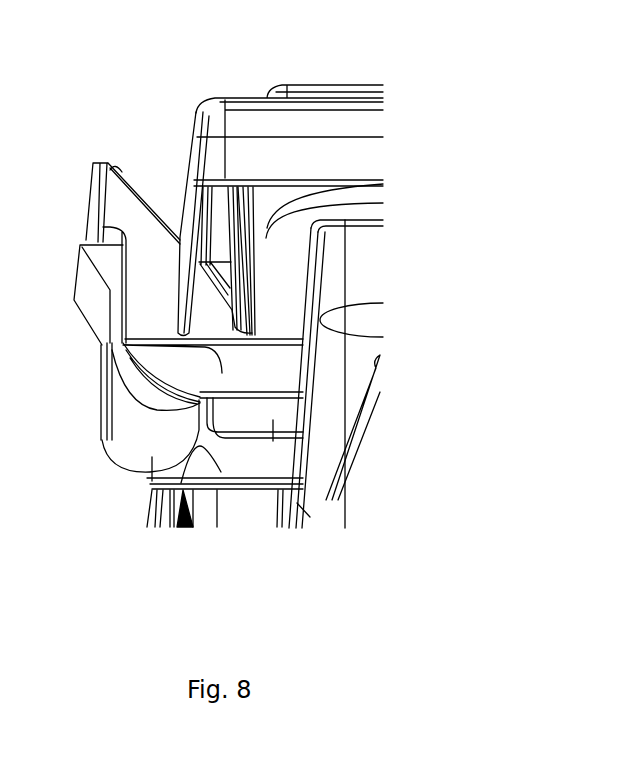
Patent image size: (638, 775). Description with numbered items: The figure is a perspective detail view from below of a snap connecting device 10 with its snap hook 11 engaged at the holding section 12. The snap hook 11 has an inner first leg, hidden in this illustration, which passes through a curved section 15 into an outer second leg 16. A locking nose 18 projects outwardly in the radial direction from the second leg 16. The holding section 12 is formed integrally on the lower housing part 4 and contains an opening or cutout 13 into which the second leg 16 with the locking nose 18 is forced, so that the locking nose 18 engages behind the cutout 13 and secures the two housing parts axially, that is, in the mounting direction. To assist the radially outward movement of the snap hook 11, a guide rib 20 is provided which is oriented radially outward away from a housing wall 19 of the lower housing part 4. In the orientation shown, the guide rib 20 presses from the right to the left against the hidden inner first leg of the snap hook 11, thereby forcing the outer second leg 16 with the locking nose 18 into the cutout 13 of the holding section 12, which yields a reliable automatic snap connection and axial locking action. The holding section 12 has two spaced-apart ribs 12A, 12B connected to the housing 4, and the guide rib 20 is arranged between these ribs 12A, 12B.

The snap connecting device 10 is at (170, 79).
The lower housing part 4 is at (362, 213).
The housing wall 19 is at (320, 449).
The holding section 12 is at (124, 205).
The cutout 13 is at (91, 238).
The locking nose 18 is at (89, 284).
The rib 12A is at (123, 343).
The second leg 16 is at (105, 375).
The snap hook 11 is at (96, 444).
The curved section 15 is at (143, 478).
The rib 12B is at (175, 478).
The guide rib 20 is at (273, 441).